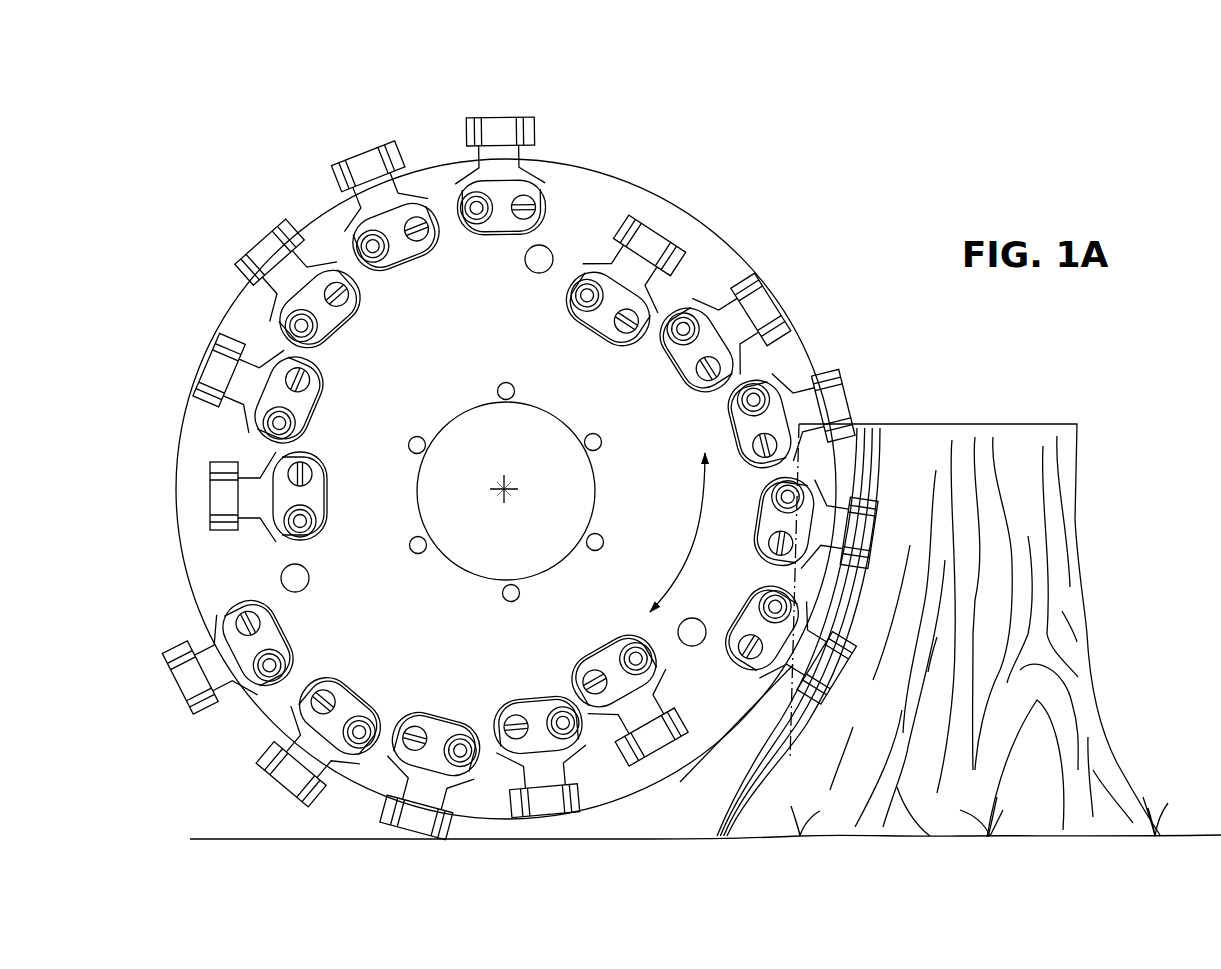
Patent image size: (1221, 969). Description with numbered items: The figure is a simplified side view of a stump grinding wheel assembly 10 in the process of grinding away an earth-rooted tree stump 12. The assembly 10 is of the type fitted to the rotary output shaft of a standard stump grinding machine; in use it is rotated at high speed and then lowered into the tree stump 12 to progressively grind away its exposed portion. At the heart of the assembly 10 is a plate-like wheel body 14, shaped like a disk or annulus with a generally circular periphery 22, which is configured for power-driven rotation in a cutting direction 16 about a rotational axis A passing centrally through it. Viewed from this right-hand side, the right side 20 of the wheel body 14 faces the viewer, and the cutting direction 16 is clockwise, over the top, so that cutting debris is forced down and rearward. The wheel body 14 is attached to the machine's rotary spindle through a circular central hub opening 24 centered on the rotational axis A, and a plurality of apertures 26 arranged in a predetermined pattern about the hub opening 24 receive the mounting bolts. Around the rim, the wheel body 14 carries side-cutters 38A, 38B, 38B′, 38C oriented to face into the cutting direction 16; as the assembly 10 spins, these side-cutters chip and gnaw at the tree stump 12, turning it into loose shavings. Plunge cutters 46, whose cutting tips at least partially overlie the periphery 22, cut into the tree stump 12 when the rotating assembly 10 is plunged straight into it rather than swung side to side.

The stump grinding wheel assembly 10 is at (764, 150).
The tree stump 12 is at (1065, 444).
The wheel body 14 is at (447, 363).
The cutting direction 16 is at (800, 242).
The right side 20 is at (212, 562).
The periphery 22 is at (638, 182).
The central hub opening 24 is at (468, 568).
The apertures 26 is at (596, 433).
The inner cutting tooth 38A is at (207, 492).
The intermediate cutting tooth 38B is at (207, 363).
The intermediate cutting tooth (outer) 38B′ is at (255, 247).
The outer cutting tooth 38C is at (498, 116).
The plunge cutter 46 is at (365, 152).
The rotational axis A is at (501, 486).